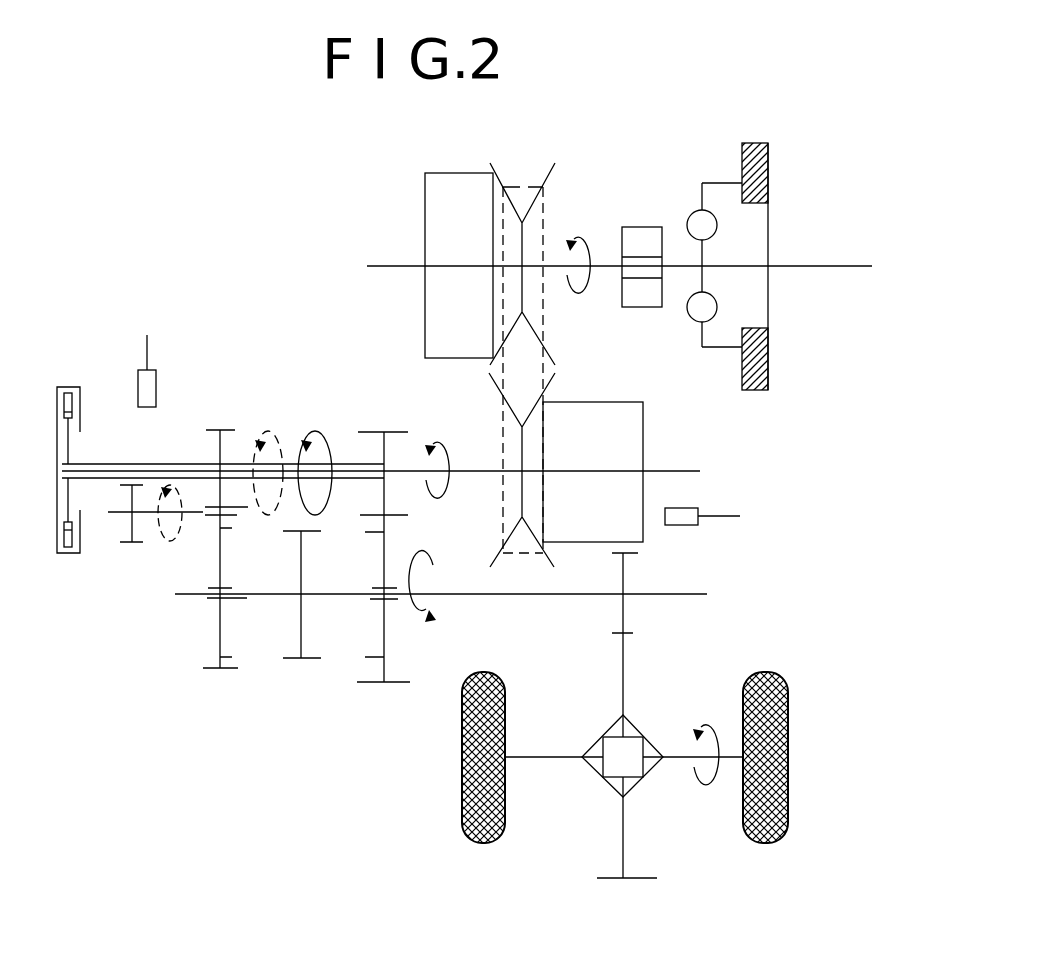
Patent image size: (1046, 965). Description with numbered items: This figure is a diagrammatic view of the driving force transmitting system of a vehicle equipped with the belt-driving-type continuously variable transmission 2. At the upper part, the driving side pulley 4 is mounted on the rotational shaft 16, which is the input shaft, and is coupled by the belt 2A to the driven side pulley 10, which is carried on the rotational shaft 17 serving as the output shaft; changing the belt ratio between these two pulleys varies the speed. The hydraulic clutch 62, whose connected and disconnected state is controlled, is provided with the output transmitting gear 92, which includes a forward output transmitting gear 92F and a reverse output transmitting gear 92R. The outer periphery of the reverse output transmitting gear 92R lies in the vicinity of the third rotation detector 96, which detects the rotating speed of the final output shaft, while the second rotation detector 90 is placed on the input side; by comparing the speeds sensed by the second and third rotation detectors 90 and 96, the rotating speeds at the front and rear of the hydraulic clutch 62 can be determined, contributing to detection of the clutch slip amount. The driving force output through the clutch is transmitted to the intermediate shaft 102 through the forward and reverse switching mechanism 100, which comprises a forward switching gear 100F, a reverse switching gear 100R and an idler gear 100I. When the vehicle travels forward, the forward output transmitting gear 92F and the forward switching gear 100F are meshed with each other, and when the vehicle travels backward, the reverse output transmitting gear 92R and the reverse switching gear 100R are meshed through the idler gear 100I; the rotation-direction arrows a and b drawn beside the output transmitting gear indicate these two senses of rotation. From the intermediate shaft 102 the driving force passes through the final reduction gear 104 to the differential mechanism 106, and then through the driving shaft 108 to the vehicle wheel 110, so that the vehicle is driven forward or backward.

The continuously variable transmission 2 is at (657, 148).
The belt 2A is at (518, 182).
The driving side pulley 4 is at (418, 176).
The driven side pulley 10 is at (658, 414).
The rotational shaft 16 is at (600, 265).
The rotational shaft 17 is at (455, 468).
The hydraulic clutch 62 is at (70, 378).
The second rotation detector 90 is at (697, 507).
The output transmitting gear 92 is at (292, 412).
The reverse output transmitting gear 92R is at (213, 428).
The forward output transmitting gear 92F is at (368, 430).
The third rotation detector 96 is at (157, 380).
The forward and reverse switching mechanism 100 is at (301, 718).
The reverse switching gear 100R is at (228, 668).
The forward switching gear 100F is at (393, 682).
The idler gear 100I is at (142, 542).
The intermediate shaft 102 is at (537, 597).
The final reduction gear 104 is at (658, 631).
The differential mechanism 106 is at (637, 778).
The driving shaft 108 is at (557, 765).
The vehicle wheel 110 is at (490, 842).
The rotation direction a is at (315, 455).
The rotation direction b is at (268, 455).